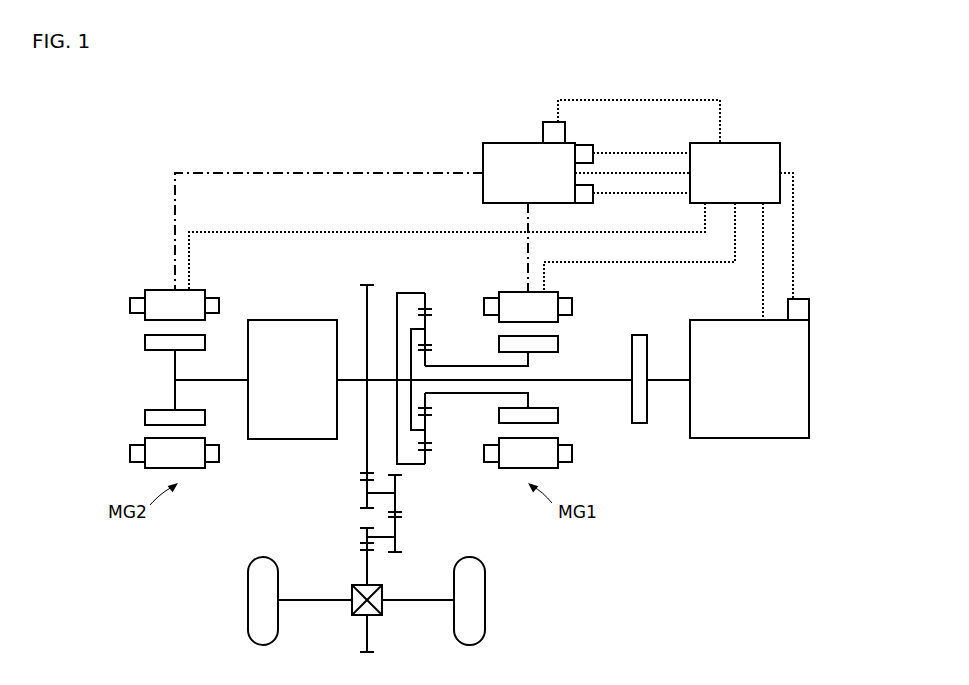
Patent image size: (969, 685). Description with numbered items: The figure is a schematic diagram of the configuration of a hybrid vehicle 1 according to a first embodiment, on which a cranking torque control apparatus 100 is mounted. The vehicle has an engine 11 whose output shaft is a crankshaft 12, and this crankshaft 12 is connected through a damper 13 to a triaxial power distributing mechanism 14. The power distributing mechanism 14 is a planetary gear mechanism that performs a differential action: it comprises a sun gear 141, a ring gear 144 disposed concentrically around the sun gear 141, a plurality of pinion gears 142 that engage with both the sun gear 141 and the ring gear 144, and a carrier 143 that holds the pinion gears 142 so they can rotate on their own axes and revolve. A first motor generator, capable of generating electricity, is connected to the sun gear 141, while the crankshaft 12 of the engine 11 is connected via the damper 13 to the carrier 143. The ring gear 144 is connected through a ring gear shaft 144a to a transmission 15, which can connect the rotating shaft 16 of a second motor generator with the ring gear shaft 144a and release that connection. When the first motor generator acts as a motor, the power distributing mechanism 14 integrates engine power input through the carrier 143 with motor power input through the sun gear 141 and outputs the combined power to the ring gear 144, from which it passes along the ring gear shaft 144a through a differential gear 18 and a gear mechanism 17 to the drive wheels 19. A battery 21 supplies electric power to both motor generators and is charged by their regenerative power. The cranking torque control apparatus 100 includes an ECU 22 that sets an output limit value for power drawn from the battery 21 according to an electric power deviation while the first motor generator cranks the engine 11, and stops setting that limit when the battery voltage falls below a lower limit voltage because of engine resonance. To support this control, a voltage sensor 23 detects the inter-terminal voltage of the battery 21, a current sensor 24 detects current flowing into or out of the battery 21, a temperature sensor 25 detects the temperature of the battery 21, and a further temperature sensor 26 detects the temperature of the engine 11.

The hybrid vehicle 1 is at (157, 111).
The cranking torque control apparatus 100 is at (831, 152).
The engine 11 is at (780, 438).
The crankshaft 12 is at (673, 382).
The damper 13 is at (642, 335).
The power distributing mechanism 14 is at (462, 351).
The sun gear 141 is at (432, 405).
The pinion gears 142 is at (432, 337).
The carrier 143 is at (426, 433).
The ring gear 144 is at (432, 303).
The ring gear shaft 144a is at (380, 379).
The transmission 15 is at (293, 320).
The rotating shaft 16 is at (235, 379).
The gear mechanism 17 is at (414, 510).
The differential gear 18 is at (375, 615).
The drive wheels 19 is at (263, 613).
The battery 21 is at (503, 143).
The ECU 22 is at (755, 143).
The voltage sensor 23 is at (584, 203).
The current sensor 24 is at (581, 145).
The temperature sensor 25 is at (548, 121).
The temperature sensor 26 is at (803, 299).